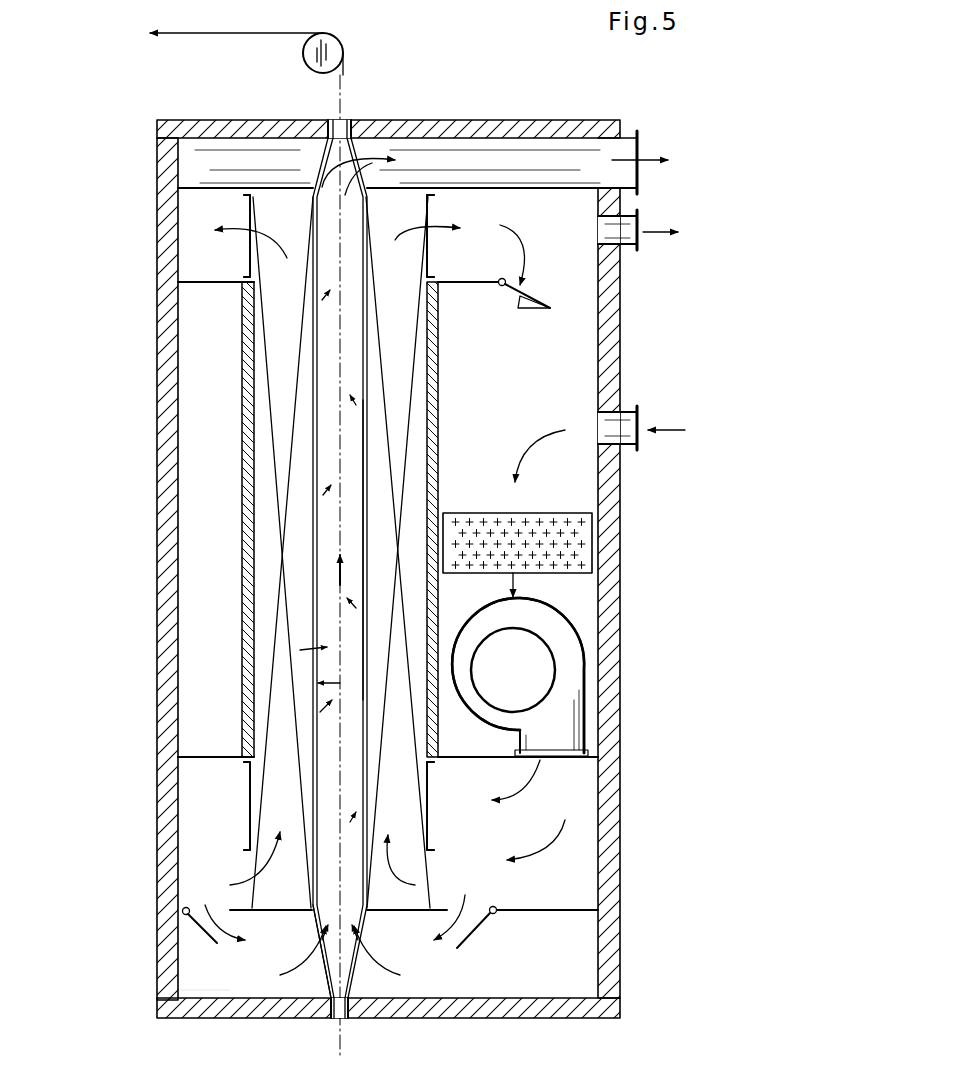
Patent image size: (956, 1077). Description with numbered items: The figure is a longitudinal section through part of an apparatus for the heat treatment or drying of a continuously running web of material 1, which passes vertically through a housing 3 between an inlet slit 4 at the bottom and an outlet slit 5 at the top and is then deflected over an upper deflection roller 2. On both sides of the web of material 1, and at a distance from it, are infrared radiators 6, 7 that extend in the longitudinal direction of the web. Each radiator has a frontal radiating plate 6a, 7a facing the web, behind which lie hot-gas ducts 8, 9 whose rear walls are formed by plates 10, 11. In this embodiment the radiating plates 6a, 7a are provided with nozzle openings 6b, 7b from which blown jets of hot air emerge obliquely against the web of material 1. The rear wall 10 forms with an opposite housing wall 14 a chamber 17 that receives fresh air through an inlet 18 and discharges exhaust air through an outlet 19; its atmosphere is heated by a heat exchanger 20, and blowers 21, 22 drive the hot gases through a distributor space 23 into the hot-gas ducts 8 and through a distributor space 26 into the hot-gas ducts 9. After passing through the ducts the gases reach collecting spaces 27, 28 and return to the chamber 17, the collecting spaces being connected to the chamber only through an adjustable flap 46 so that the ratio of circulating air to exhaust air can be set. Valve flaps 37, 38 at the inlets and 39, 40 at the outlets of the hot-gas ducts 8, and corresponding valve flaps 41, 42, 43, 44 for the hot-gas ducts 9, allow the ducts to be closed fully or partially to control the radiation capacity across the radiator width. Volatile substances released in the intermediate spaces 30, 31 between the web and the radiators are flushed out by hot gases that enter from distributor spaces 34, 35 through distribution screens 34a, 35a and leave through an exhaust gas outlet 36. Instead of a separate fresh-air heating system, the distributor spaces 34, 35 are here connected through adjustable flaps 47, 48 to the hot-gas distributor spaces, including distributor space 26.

The web of material 1 is at (212, 30).
The upper deflection roller 2 is at (333, 47).
The housing 3 is at (160, 435).
The inlet slit 4 is at (330, 1005).
The outlet slit 5 is at (347, 130).
The infrared radiator 6 is at (355, 556).
The radiating plate 6a is at (357, 531).
The nozzle opening 6b is at (358, 607).
The infrared radiator 7 is at (340, 683).
The radiating plate 7a is at (300, 650).
The nozzle opening 7b is at (320, 712).
The hot-gas duct 8 is at (395, 323).
The hot-gas duct 9 is at (285, 320).
The rear wall plate 10 is at (432, 370).
The rear wall plate 11 is at (250, 362).
The housing wall 14 is at (603, 339).
The chamber 17 is at (498, 413).
The inlet 18 is at (627, 436).
The outlet 19 is at (610, 237).
The heat exchanger 20 is at (560, 522).
The blower 21 is at (563, 720).
The blower 22 is at (518, 675).
The distributor space 23 is at (485, 833).
The distributor space 26 is at (200, 843).
The collecting space 27 is at (207, 205).
The collecting space 28 is at (480, 205).
The intermediate space 30 is at (350, 756).
The intermediate space 31 is at (310, 870).
The distributor space 34 is at (532, 975).
The distribution screen 34a is at (363, 931).
The distributor space 35 is at (230, 980).
The distribution screen 35a is at (313, 928).
The exhaust gas outlet 36 is at (580, 175).
The valve flap 37 is at (430, 775).
The valve flap 38 is at (430, 806).
The valve flap 39 is at (430, 250).
The valve flap 40 is at (430, 236).
The valve flap 41 is at (250, 796).
The valve flap 42 is at (247, 806).
The valve flap 43 is at (250, 253).
The valve flap 44 is at (247, 236).
The adjustable flap 46 is at (550, 304).
The adjustable flap 47 is at (463, 943).
The adjustable flap 48 is at (190, 932).